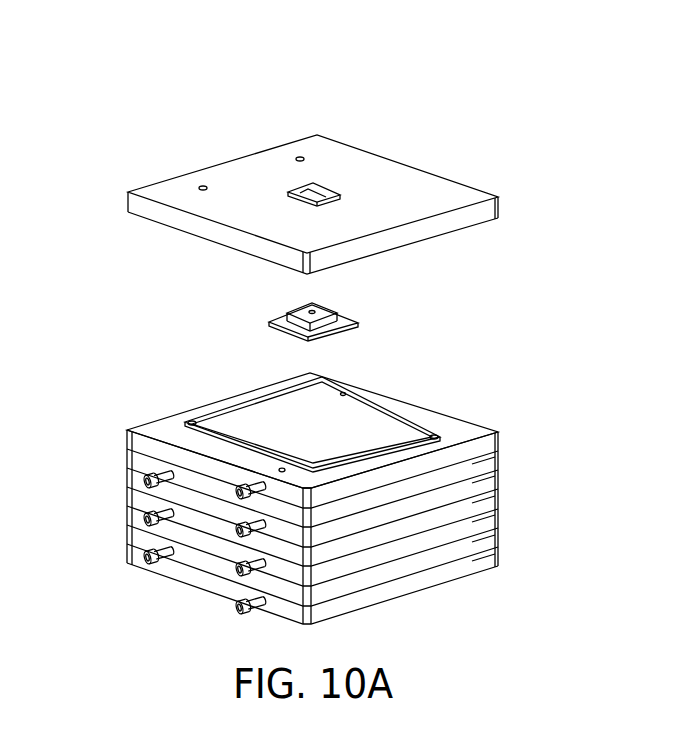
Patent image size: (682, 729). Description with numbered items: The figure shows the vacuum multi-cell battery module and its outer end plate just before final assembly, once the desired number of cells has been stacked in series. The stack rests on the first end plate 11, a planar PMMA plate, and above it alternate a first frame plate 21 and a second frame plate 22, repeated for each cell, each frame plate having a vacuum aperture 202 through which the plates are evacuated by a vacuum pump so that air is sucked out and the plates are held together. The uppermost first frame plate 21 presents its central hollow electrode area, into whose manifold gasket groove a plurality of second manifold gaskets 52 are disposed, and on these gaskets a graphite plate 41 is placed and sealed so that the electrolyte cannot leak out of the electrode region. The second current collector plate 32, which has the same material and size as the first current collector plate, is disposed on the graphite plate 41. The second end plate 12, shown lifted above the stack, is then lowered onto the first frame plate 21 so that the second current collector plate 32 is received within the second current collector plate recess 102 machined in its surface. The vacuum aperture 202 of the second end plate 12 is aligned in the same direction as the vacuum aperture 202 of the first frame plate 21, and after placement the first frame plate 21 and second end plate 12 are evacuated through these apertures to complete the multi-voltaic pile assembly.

The first end plate 11 is at (498, 558).
The second end plate 12 is at (448, 194).
The first frame plate 21 is at (498, 441).
The second frame plate 22 is at (498, 463).
The second current collector plate 32 is at (333, 307).
The graphite plate 41 is at (292, 430).
The second manifold gaskets 52 is at (230, 407).
The second current collector plate recess 102 is at (327, 192).
The vacuum aperture 202 is at (282, 470).